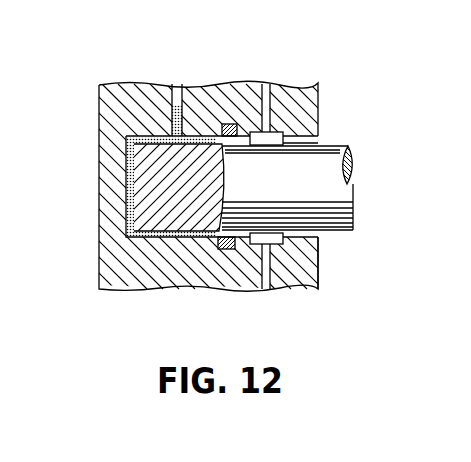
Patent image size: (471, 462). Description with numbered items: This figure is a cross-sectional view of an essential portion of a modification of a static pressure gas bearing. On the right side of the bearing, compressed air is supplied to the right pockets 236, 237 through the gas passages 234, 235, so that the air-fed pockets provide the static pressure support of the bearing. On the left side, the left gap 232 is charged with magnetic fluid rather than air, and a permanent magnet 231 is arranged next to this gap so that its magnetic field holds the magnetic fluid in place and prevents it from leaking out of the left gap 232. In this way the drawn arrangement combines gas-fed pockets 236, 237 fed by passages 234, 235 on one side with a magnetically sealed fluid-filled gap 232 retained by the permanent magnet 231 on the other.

The permanent magnet 231 is at (225, 249).
The left gap 232 is at (147, 237).
The gas passage 234 is at (264, 134).
The gas passage 235 is at (287, 287).
The right pocket 236 is at (278, 145).
The right pocket 237 is at (318, 251).